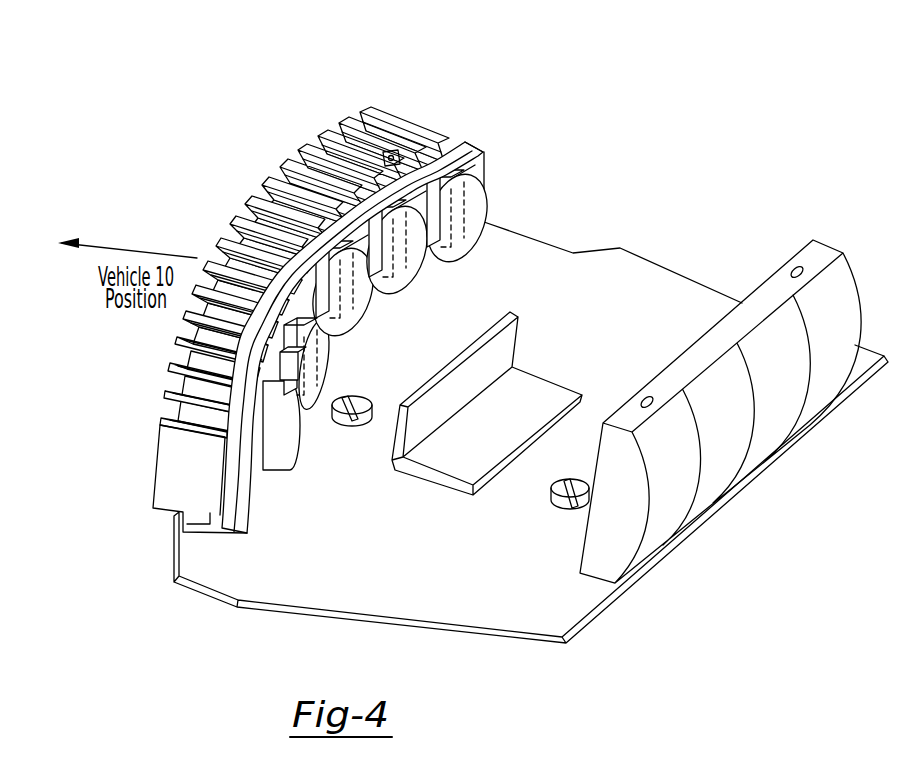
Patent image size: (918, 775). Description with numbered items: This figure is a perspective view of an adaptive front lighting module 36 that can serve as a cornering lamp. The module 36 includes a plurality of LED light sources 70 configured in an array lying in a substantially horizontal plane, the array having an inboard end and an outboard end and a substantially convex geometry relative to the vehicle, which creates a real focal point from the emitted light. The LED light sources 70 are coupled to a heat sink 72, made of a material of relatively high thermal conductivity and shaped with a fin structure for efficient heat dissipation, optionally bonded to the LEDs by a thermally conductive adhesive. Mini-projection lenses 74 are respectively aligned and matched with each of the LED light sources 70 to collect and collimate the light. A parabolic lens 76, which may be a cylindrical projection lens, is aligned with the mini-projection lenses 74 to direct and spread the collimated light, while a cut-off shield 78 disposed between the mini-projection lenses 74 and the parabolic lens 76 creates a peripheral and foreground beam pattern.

The adaptive front lighting module 36 is at (313, 70).
The LED light sources 70 is at (477, 236).
The heat sink 72 is at (241, 217).
The mini-projection lenses 74 is at (447, 254).
The parabolic lens 76 is at (788, 385).
The cut-off shield 78 is at (450, 389).